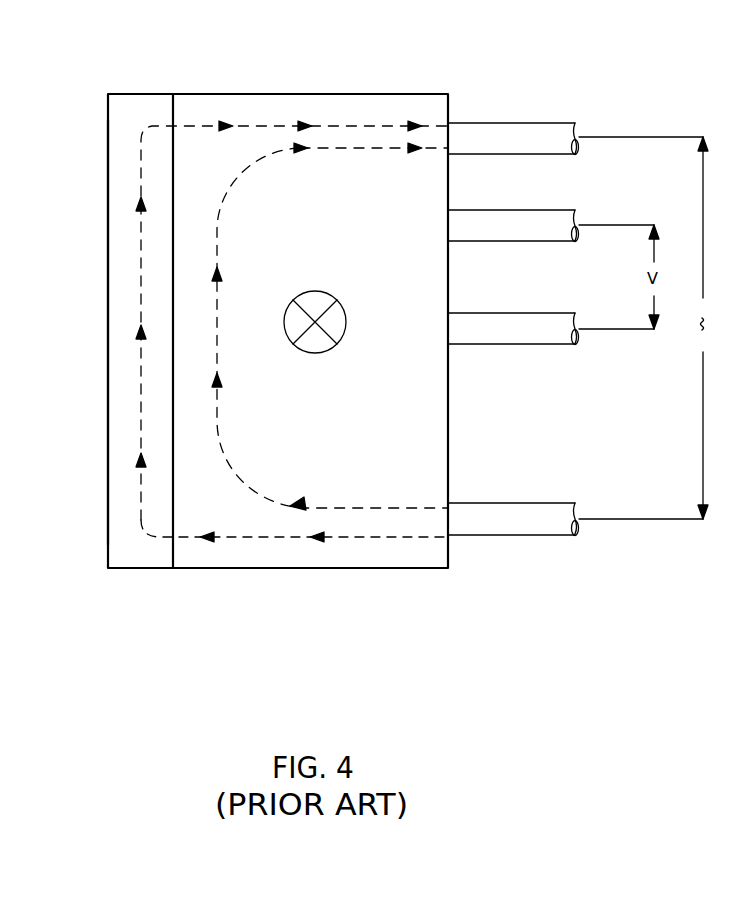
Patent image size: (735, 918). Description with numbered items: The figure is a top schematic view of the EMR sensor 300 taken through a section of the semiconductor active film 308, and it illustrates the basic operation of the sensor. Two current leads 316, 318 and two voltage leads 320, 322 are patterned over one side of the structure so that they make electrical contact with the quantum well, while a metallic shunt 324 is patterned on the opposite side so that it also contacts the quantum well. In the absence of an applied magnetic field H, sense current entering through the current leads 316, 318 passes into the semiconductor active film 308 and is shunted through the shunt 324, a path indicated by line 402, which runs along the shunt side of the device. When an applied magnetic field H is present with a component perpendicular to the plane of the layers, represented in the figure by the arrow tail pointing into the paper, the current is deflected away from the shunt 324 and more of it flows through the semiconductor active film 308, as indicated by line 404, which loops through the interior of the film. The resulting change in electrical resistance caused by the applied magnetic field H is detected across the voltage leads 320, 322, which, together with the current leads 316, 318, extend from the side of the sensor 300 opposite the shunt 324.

The EMR sensor 300 is at (392, 56).
The semiconductor active film 308 is at (273, 101).
The current lead 316 is at (514, 503).
The current lead 318 is at (499, 136).
The voltage lead 320 is at (500, 325).
The voltage lead 322 is at (498, 223).
The metallic shunt 324 is at (116, 135).
The line 402 is at (232, 540).
The line 404 is at (316, 506).
The applied magnetic field H is at (337, 300).